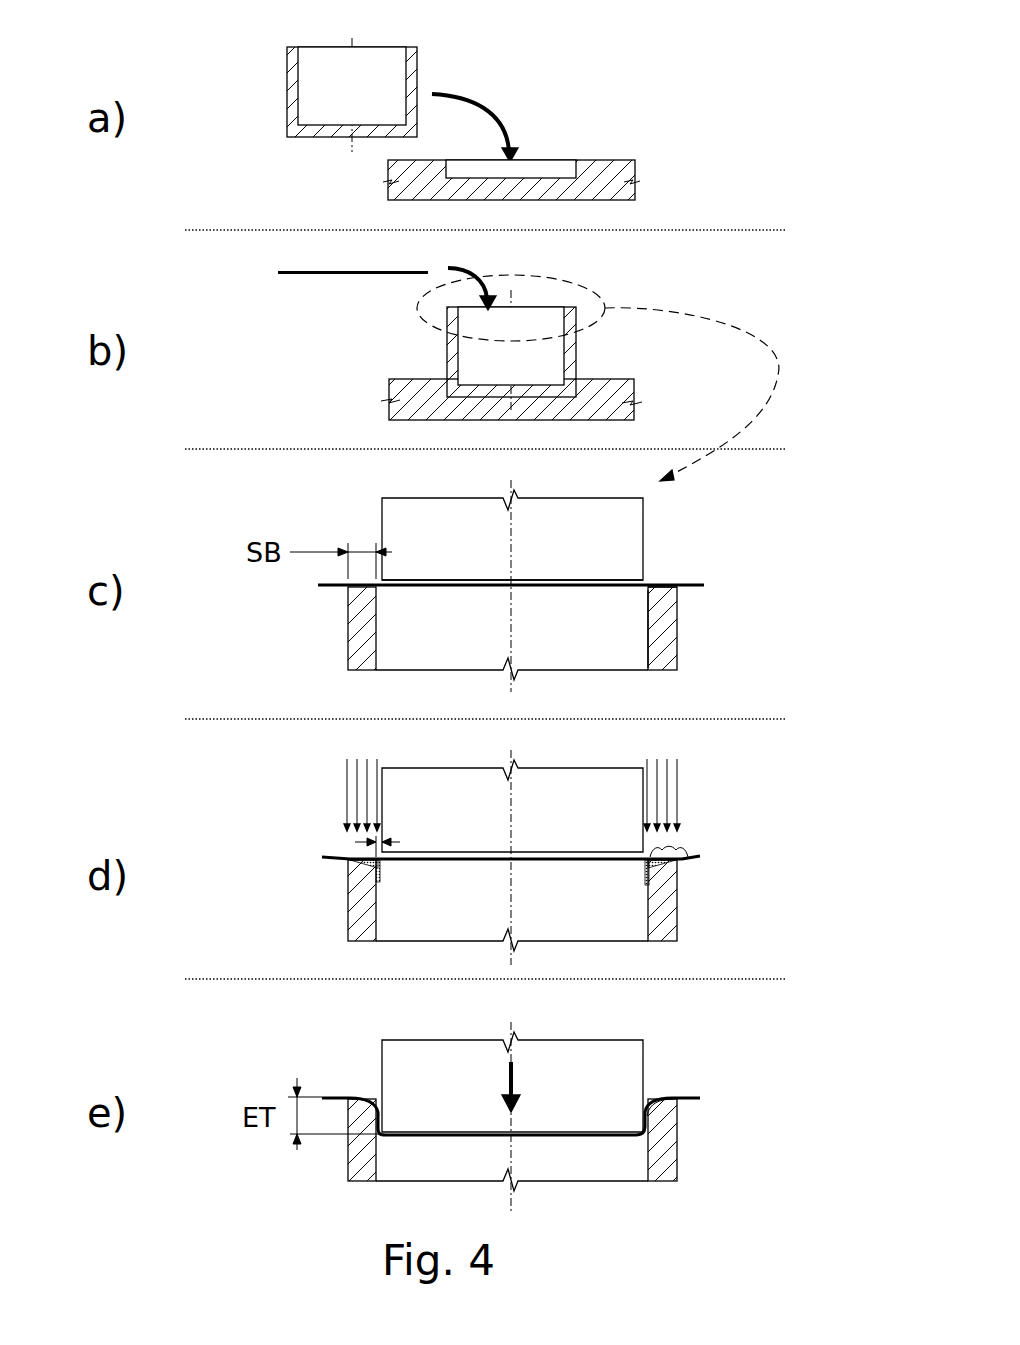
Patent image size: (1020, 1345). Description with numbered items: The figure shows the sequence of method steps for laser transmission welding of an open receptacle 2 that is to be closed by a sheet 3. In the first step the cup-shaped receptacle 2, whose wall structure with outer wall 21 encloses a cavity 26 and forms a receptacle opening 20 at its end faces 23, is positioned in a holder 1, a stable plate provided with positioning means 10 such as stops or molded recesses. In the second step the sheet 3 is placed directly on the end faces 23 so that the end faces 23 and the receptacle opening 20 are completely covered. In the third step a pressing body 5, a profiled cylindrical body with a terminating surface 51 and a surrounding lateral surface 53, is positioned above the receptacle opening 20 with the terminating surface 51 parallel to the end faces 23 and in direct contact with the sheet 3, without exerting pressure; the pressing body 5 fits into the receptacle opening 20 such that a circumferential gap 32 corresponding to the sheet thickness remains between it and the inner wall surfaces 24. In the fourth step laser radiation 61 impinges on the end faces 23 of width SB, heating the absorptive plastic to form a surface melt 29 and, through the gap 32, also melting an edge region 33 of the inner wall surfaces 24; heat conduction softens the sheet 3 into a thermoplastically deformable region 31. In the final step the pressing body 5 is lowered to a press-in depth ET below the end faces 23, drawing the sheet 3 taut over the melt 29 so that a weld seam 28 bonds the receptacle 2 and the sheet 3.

The holder 1 is at (607, 168).
The receptacle 2 is at (325, 136).
The sheet 3 is at (335, 276).
The pressing body 5 is at (420, 512).
The positioning means 10 is at (548, 165).
The receptacle opening 20 is at (326, 38).
The outer wall 21 is at (362, 627).
The end faces 23 is at (662, 602).
The inner wall surfaces 24 is at (638, 643).
The cavity 26 is at (325, 103).
The weld seam 28 is at (358, 1113).
The surface melt 29 is at (372, 873).
The thermoplastically deformable region 31 is at (660, 848).
The circumferential gap 32 is at (356, 843).
The edge region 33 is at (379, 870).
The terminating surface 51 is at (595, 580).
The lateral surface 53 is at (650, 508).
The laser radiation 61 is at (357, 795).